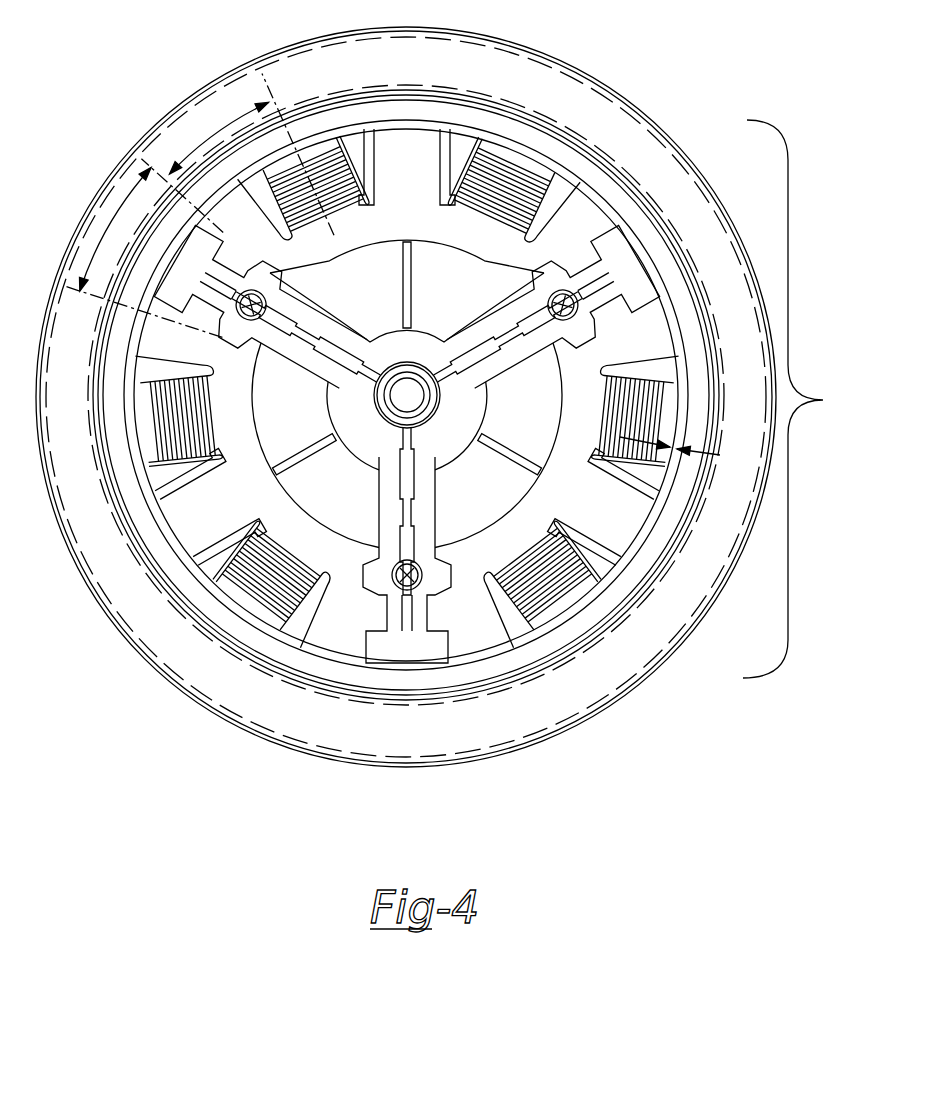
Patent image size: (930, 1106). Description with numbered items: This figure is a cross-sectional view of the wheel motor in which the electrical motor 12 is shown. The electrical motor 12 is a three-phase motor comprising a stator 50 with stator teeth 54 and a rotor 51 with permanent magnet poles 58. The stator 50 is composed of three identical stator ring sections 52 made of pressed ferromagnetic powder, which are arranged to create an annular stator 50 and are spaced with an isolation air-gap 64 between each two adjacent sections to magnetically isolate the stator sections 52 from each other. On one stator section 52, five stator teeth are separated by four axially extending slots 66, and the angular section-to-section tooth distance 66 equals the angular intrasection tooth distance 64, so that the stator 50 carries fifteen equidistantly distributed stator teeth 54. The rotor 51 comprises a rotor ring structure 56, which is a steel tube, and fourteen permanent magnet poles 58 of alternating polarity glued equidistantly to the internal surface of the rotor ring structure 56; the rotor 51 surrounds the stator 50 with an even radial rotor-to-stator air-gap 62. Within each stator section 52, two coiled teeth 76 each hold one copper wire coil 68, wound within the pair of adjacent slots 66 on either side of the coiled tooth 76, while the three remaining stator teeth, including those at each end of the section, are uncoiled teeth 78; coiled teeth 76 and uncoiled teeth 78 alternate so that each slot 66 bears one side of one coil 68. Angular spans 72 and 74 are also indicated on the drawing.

The electrical motor 12 is at (448, 397).
The stator 50 is at (595, 192).
The rotor 51 is at (558, 133).
The stator ring section 52 is at (440, 237).
The stator teeth 54 is at (430, 133).
The rotor ring structure 56 is at (497, 684).
The permanent magnet poles 58 is at (548, 632).
The rotor-to-stator air-gap 62 is at (670, 455).
The isolation air-gap 64 is at (530, 340).
The slots 66 is at (360, 157).
The copper wire coil 68 is at (322, 566).
The angular span 72 is at (193, 147).
The angular span 74 is at (121, 200).
The coiled teeth 76 is at (258, 605).
The uncoiled teeth 78 is at (190, 525).